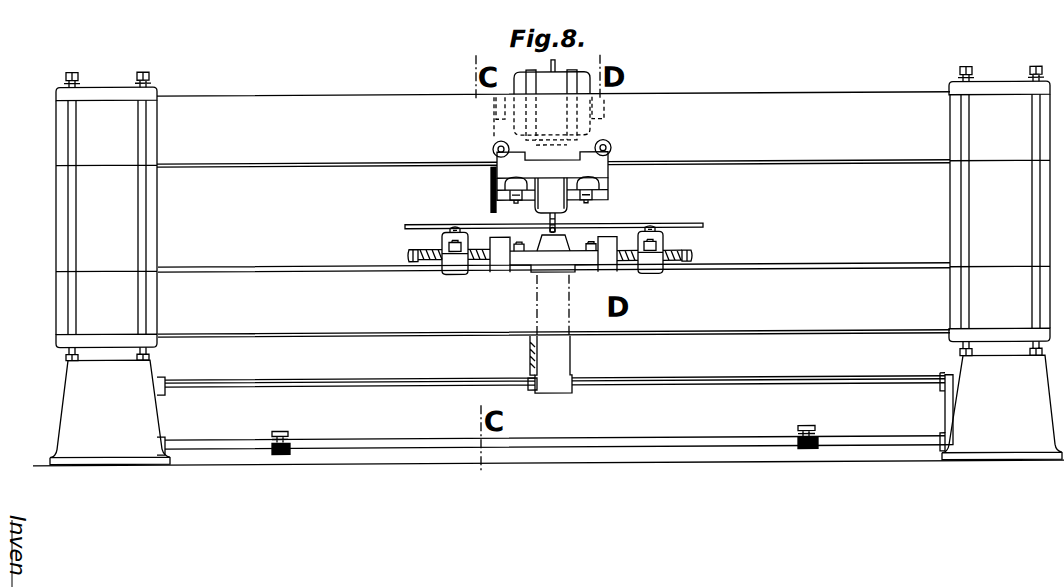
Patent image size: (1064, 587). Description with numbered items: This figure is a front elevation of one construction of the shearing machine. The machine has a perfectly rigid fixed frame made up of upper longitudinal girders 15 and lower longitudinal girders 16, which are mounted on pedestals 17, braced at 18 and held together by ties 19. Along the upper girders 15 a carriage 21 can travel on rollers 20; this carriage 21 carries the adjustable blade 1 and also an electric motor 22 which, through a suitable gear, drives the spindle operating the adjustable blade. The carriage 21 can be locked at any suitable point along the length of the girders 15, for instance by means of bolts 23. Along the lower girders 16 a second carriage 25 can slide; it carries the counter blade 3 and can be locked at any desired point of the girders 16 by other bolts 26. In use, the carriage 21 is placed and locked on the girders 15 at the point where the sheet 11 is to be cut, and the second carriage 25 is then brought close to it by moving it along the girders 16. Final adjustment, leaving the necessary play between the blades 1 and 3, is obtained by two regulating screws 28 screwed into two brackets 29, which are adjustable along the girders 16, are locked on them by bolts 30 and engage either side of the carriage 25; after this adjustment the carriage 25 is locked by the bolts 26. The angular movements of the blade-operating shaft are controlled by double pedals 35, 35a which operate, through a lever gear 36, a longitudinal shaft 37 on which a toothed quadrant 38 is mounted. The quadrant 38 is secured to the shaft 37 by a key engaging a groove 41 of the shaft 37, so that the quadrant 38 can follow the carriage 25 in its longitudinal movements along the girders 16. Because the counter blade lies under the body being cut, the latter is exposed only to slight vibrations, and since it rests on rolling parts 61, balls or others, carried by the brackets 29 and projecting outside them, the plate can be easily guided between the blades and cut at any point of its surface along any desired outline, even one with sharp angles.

The adjustable blade 1 is at (551, 215).
The counter blade 3 is at (555, 236).
The sheet 11 is at (418, 227).
The upper longitudinal girders 15 is at (553, 129).
The lower longitudinal girders 16 is at (554, 300).
The pedestals 17 is at (556, 410).
The bracing 18 is at (106, 216).
The ties 19 is at (143, 148).
The rollers 20 is at (495, 152).
The carriage 21 is at (551, 169).
The electric motor 22 is at (549, 103).
The bolts 23 is at (516, 204).
The second carriage 25 is at (552, 270).
The bolts 26 is at (518, 256).
The regulating screws 28 is at (412, 252).
The brackets 29 is at (455, 268).
The bolts 30 is at (452, 256).
The pedal 35 is at (272, 435).
The pedal 35a is at (291, 448).
The lever gear 36 is at (945, 409).
The longitudinal shaft 37 is at (402, 381).
The toothed quadrant 38 is at (530, 359).
The groove 41 is at (430, 441).
The rolling parts 61 is at (455, 230).